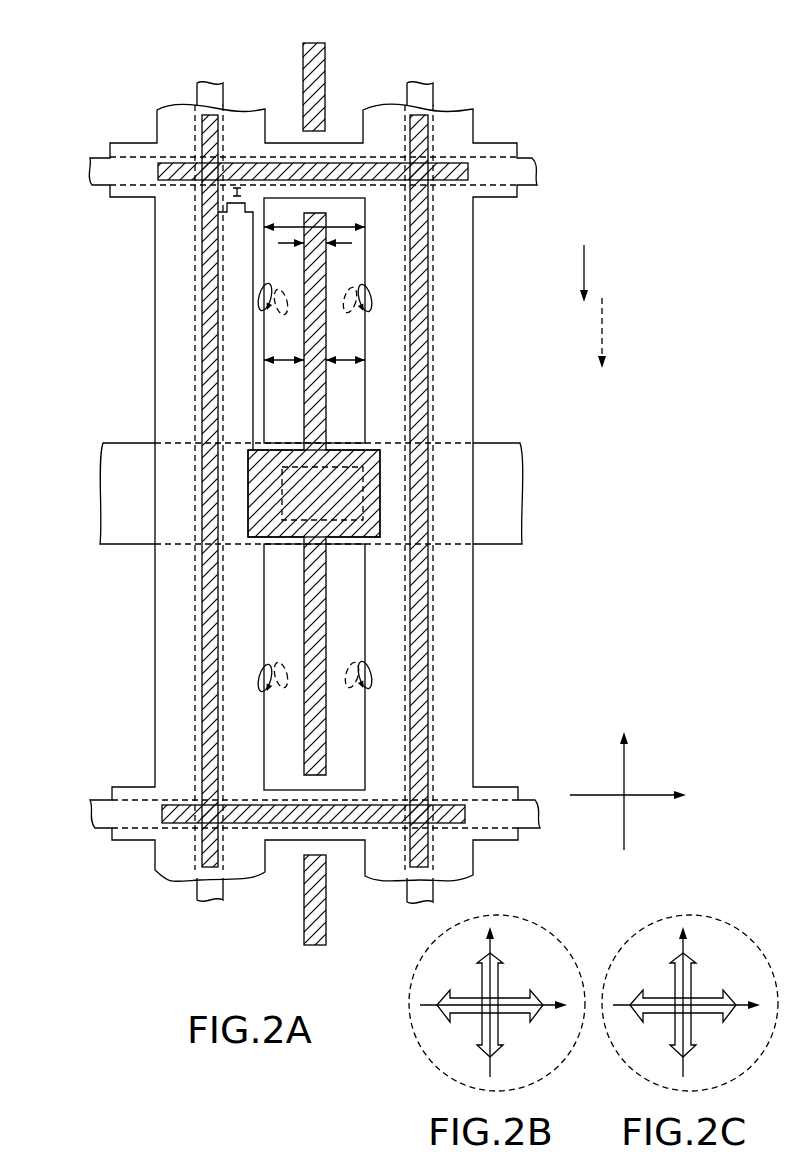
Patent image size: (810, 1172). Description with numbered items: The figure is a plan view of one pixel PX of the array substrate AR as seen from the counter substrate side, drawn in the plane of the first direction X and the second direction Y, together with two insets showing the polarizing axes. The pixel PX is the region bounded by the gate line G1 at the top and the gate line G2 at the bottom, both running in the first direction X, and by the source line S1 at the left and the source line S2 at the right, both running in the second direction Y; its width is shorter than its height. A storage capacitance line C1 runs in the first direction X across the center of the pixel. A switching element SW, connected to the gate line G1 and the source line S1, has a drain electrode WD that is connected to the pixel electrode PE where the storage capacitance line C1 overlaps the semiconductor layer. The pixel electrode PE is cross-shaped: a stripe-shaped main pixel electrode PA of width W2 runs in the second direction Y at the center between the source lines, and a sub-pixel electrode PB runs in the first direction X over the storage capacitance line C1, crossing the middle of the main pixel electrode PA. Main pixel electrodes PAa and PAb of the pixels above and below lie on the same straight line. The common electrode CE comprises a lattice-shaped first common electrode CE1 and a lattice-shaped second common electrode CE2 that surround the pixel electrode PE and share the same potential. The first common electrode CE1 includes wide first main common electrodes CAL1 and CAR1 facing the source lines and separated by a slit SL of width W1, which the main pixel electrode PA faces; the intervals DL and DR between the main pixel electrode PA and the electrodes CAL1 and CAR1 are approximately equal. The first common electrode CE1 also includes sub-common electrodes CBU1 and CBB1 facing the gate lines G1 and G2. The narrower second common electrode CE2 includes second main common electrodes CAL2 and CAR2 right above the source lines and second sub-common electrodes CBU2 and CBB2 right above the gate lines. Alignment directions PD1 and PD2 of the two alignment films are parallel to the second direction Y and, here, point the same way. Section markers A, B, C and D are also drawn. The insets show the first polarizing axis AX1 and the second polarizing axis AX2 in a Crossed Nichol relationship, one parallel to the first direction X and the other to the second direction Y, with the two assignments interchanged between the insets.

In FIG. 2A, the pixel PX is at (421, 166).
In FIG. 2A, the array substrate AR is at (547, 150).
In FIG. 2A, the gate line G1 is at (96, 172).
In FIG. 2A, the gate line G2 is at (96, 818).
In FIG. 2A, the source line S1 is at (208, 82).
In FIG. 2A, the source line S2 is at (421, 82).
In FIG. 2A, the storage capacitance line C1 is at (100, 492).
In FIG. 2A, the slit SL is at (352, 407).
In FIG. 2A, the pixel electrode PE is at (330, 342).
In FIG. 2A, the main pixel electrode PA is at (303, 372).
In FIG. 2A, the sub-pixel electrode PB is at (284, 545).
In FIG. 2A, the main pixel electrode PAa is at (313, 42).
In FIG. 2A, the main pixel electrode PAb is at (318, 945).
In FIG. 2A, the first sub-common electrode CBU1 is at (330, 193).
In FIG. 2A, the second sub-common electrode CBU2 is at (248, 162).
In FIG. 2A, the first sub-common electrode CBB1 is at (288, 792).
In FIG. 2A, the second sub-common electrode CBB2 is at (333, 808).
In FIG. 2A, the first main common electrode CAL1 is at (236, 630).
In FIG. 2A, the second main common electrode CAL2 is at (210, 582).
In FIG. 2A, the first main common electrode CAR1 is at (390, 610).
In FIG. 2A, the second main common electrode CAR2 is at (428, 566).
In FIG. 2A, the first common electrode CE1 is at (167, 890).
In FIG. 2A, the second common electrode CE2 is at (207, 884).
In FIG. 2A, the common electrode CE is at (218, 953).
In FIG. 2A, the switching element SW is at (240, 225).
In FIG. 2A, the drain electrode WD is at (368, 483).
In FIG. 2A, the width of the slit W1 is at (335, 226).
In FIG. 2A, the width of the main pixel electrode W2 is at (350, 243).
In FIG. 2A, the electrode interval DL is at (292, 360).
In FIG. 2A, the electrode interval DR is at (345, 360).
In FIG. 2A, the first alignment direction PD1 is at (588, 272).
In FIG. 2A, the second alignment direction PD2 is at (606, 338).
In FIG. 2A, the section line A is at (176, 720).
In FIG. 2A, the section line B is at (463, 720).
In FIG. 2A, the section line C is at (353, 155).
In FIG. 2A, the section line D is at (355, 830).
In FIG. 2A, the first direction X is at (636, 795).
In FIG. 2B, the first direction X is at (501, 1005).
In FIG. 2C, the first direction X is at (694, 1005).
In FIG. 2A, the second direction Y is at (622, 777).
In FIG. 2B, the second direction Y is at (496, 1000).
In FIG. 2C, the second direction Y is at (689, 1000).
In FIG. 2B, the first polarizing axis AX1 is at (522, 1013).
In FIG. 2C, the first polarizing axis AX1 is at (693, 970).
In FIG. 2B, the second polarizing axis AX2 is at (500, 970).
In FIG. 2C, the second polarizing axis AX2 is at (715, 1013).